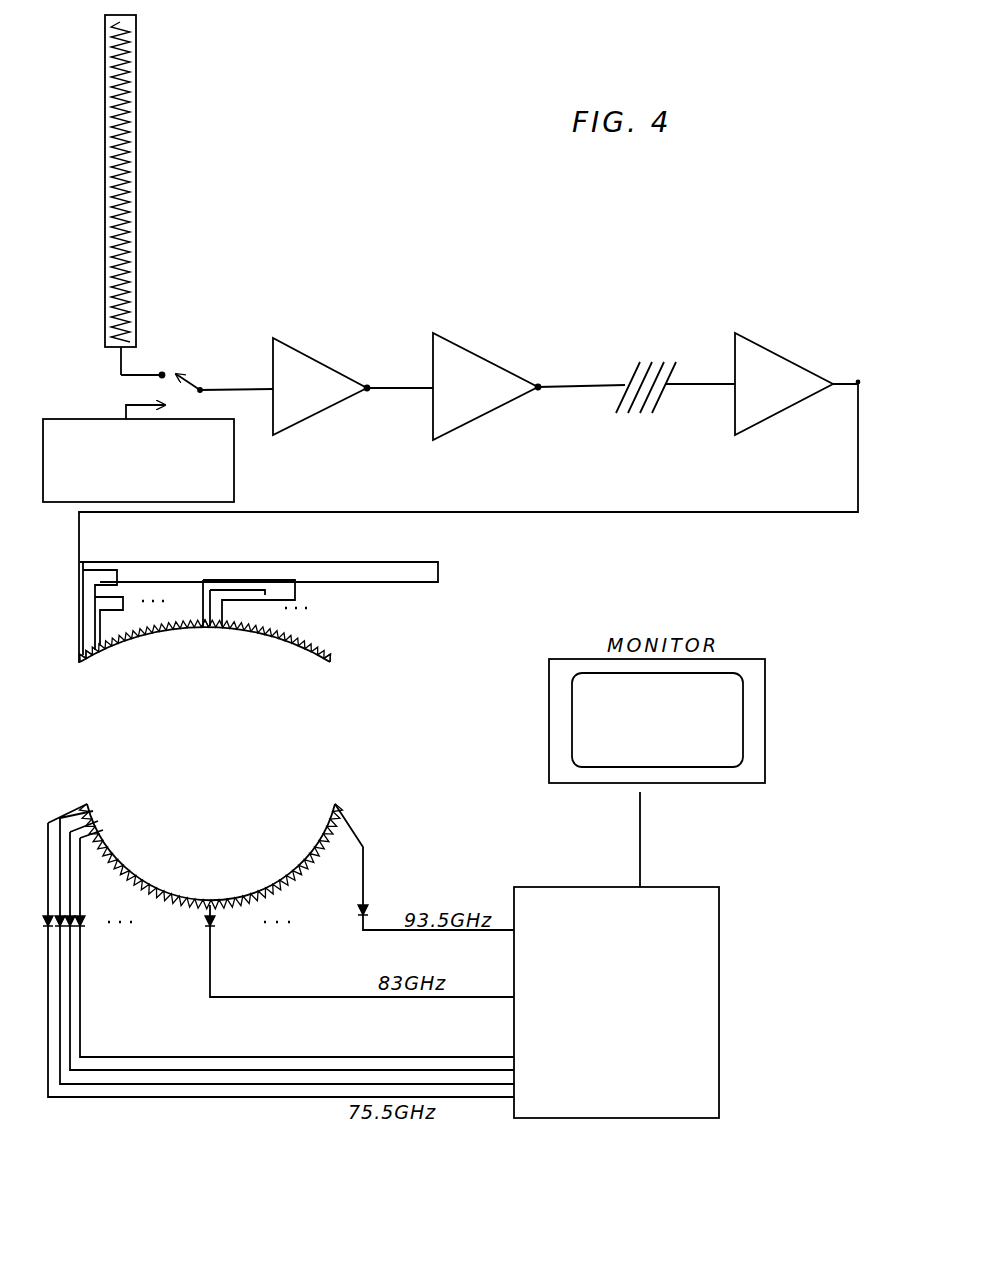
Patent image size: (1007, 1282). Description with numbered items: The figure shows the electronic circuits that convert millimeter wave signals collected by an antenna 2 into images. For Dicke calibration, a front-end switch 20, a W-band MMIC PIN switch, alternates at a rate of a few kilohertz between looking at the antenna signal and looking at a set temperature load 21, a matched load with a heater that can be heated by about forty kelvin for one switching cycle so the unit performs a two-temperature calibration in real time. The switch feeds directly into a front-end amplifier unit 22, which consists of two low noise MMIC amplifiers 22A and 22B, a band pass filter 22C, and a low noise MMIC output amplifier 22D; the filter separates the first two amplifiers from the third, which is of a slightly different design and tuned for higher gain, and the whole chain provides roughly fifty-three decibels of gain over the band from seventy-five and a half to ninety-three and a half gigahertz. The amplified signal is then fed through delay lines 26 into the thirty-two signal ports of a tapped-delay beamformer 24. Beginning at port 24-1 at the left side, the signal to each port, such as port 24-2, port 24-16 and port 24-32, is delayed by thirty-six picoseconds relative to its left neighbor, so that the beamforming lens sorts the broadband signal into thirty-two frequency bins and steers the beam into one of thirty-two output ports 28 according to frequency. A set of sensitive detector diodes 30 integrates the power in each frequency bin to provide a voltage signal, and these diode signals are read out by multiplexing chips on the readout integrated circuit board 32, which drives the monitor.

The antenna 2 is at (152, 92).
The front-end switch 20 is at (192, 357).
The set temperature load 21 is at (60, 504).
The front-end amplifier unit 22 is at (572, 291).
The low noise MMIC amplifier 22A is at (315, 355).
The low noise MMIC amplifier 22B is at (490, 358).
The band pass filter 22C is at (642, 354).
The low noise MMIC output amplifier 22D is at (762, 341).
The beamformer 24 is at (390, 691).
The signal port 24-1 is at (84, 669).
The signal port 24-2 is at (92, 669).
The signal port 24-16 is at (198, 634).
The signal port 24-32 is at (341, 653).
The delay lines 26 is at (450, 612).
The output ports 28 is at (357, 814).
The detector diodes 30 is at (378, 906).
The readout integrated circuit board 32 is at (558, 884).